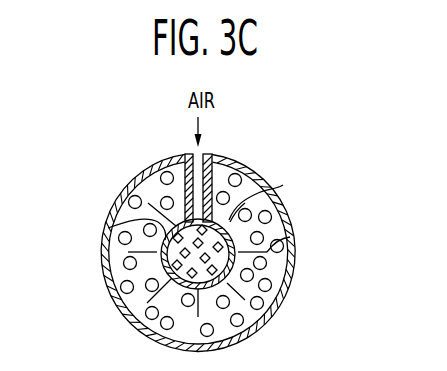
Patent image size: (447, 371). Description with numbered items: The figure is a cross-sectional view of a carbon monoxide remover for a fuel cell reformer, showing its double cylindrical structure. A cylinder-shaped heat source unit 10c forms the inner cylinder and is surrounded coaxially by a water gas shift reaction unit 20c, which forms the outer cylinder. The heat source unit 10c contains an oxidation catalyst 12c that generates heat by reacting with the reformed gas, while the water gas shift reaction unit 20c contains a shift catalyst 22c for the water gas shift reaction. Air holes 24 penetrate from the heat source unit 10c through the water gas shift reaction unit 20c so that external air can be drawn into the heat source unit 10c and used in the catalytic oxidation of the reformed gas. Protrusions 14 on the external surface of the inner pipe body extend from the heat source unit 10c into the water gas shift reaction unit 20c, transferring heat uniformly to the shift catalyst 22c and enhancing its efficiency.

The heat source unit 10c is at (283, 185).
The oxidation catalyst 12c is at (101, 226).
The protrusions 14 is at (295, 237).
The water gas shift reaction unit 20c is at (295, 263).
The shift catalyst 22c is at (270, 289).
The air holes 24 is at (197, 170).